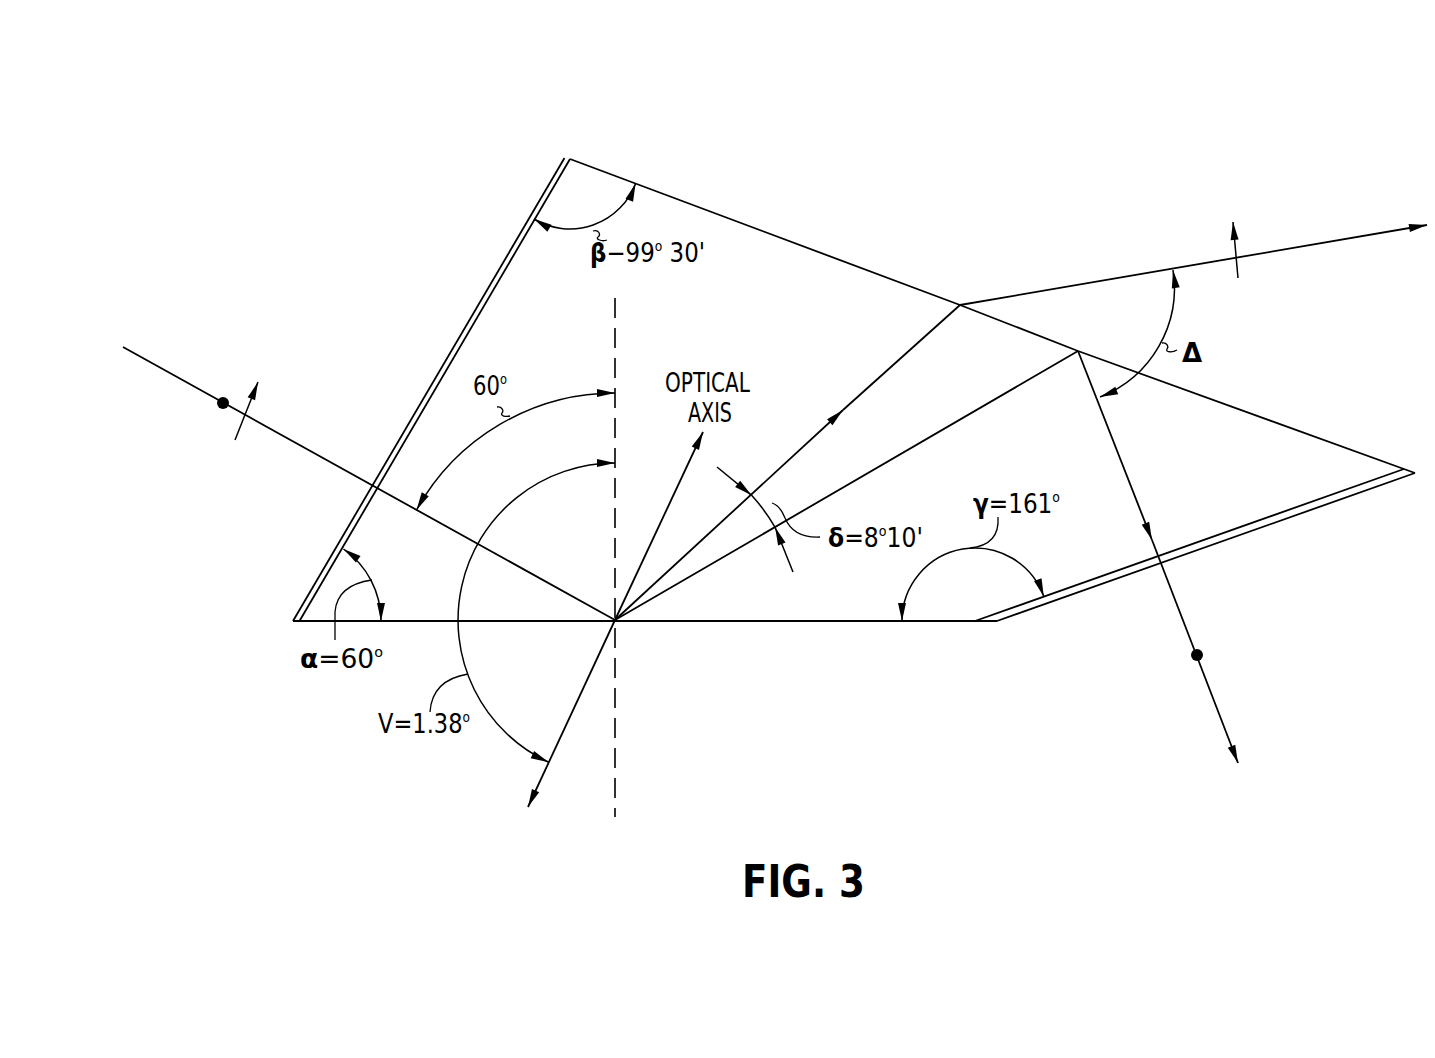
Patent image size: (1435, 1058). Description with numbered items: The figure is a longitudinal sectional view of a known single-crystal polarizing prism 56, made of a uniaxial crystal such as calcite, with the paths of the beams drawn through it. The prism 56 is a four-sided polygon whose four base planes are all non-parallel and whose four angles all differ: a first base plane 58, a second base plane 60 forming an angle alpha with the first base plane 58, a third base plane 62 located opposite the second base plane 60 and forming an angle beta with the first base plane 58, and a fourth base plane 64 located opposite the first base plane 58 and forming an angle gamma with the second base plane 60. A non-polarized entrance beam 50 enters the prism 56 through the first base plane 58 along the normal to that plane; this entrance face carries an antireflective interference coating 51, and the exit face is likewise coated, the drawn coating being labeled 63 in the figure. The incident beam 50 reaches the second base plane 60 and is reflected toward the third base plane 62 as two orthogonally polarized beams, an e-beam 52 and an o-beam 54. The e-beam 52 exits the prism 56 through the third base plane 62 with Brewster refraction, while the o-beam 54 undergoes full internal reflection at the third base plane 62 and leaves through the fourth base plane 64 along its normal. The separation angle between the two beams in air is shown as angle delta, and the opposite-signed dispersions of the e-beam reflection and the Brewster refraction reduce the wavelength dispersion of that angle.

The non-polarized entrance beam 50 is at (160, 363).
The antireflective interference coating 51 is at (348, 523).
The first base plane 58 is at (365, 517).
The prism 56 is at (862, 187).
The e-beam 52 is at (1100, 282).
The third base plane 62 is at (1262, 411).
The fourth base plane 64 is at (1323, 497).
The exit face outer surface 63 is at (1285, 522).
The o-beam 54 is at (1183, 610).
The second base plane 60 is at (722, 623).